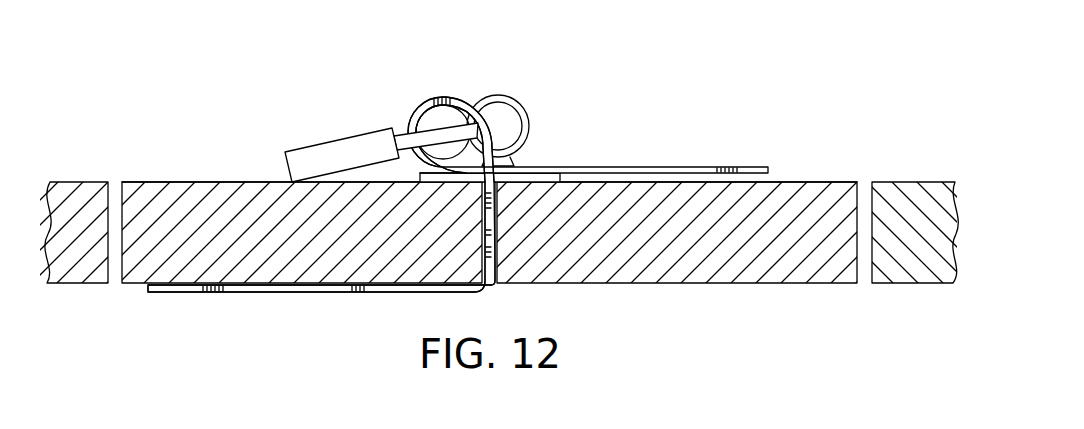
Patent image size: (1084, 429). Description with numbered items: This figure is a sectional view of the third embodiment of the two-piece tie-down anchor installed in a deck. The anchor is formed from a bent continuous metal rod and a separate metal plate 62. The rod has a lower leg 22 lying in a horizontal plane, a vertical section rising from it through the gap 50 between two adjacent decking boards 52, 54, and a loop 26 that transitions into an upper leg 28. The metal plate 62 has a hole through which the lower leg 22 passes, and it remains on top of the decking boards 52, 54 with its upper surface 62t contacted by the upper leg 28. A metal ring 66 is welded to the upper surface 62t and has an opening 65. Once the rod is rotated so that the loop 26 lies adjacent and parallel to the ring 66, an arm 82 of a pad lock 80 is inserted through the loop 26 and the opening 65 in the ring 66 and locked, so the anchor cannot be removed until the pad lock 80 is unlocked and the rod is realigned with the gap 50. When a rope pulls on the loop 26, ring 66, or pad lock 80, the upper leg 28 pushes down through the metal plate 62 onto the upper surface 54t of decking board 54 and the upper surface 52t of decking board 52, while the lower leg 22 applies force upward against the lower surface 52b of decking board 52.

The lower leg 22 is at (199, 292).
The loop 26 is at (427, 97).
The upper leg 28 is at (682, 170).
The gap 50 is at (488, 217).
The decking board 52 is at (141, 182).
The upper surface of decking board 52t is at (205, 182).
The lower surface of decking board 52b is at (320, 292).
The decking board 54 is at (792, 182).
The upper surface of decking board 54t is at (842, 182).
The metal plate 62 is at (520, 178).
The upper surface of metal plate 62t is at (553, 167).
The opening of ring 65 is at (500, 107).
The metal ring 66 is at (483, 93).
The pad lock 80 is at (306, 160).
The arm 82 is at (432, 124).